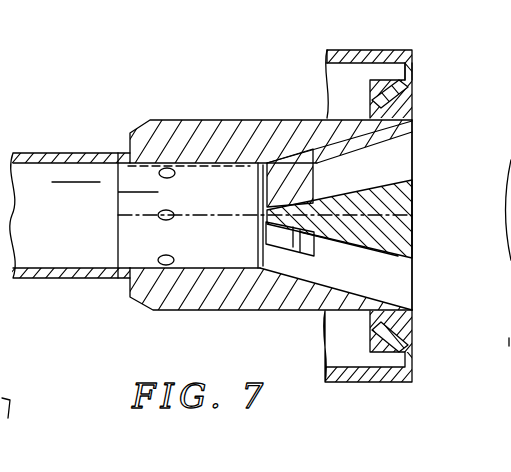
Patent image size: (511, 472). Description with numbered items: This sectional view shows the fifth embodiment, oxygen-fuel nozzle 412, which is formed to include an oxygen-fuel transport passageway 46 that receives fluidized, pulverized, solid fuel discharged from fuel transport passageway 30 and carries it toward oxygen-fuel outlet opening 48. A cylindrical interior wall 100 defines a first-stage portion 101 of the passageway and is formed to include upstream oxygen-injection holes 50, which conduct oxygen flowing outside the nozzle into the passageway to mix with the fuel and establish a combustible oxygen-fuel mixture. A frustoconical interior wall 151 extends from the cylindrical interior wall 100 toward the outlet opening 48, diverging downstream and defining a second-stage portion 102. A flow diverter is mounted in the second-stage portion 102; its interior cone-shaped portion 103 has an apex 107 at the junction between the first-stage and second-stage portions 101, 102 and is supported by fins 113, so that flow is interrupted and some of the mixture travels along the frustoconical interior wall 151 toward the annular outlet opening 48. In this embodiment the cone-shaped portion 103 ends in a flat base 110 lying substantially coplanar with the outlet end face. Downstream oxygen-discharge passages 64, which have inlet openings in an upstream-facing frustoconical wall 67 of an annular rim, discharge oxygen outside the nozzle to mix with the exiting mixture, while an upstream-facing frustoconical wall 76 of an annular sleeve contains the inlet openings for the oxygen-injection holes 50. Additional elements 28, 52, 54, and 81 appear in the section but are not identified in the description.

The pipe 28 is at (28, 144).
The fuel transport passageway 30 is at (58, 167).
The oxygen-fuel nozzle 412 is at (157, 109).
The nut corner 52 is at (319, 52).
The nut 54 is at (385, 51).
The nut flange 81 is at (410, 74).
The oxygen-discharge passages 64 is at (426, 114).
The oxygen-fuel outlet opening 48 is at (410, 126).
The fins 113 is at (293, 160).
The frustoconical interior wall 151 is at (344, 146).
The apex 107 is at (257, 215).
The cylindrical interior wall 100 is at (119, 191).
The upstream oxygen-injection holes 50 is at (171, 221).
The flat base 110 is at (413, 203).
The interior cone-shaped portion 103 is at (385, 244).
The oxygen-fuel transport passageway 46 is at (130, 245).
The upstream facing frustoconical wall 76 is at (138, 307).
The first-stage portion 101 is at (224, 268).
The second-stage portion 102 is at (330, 290).
The upstream-facing frustoconical wall 67 is at (366, 367).